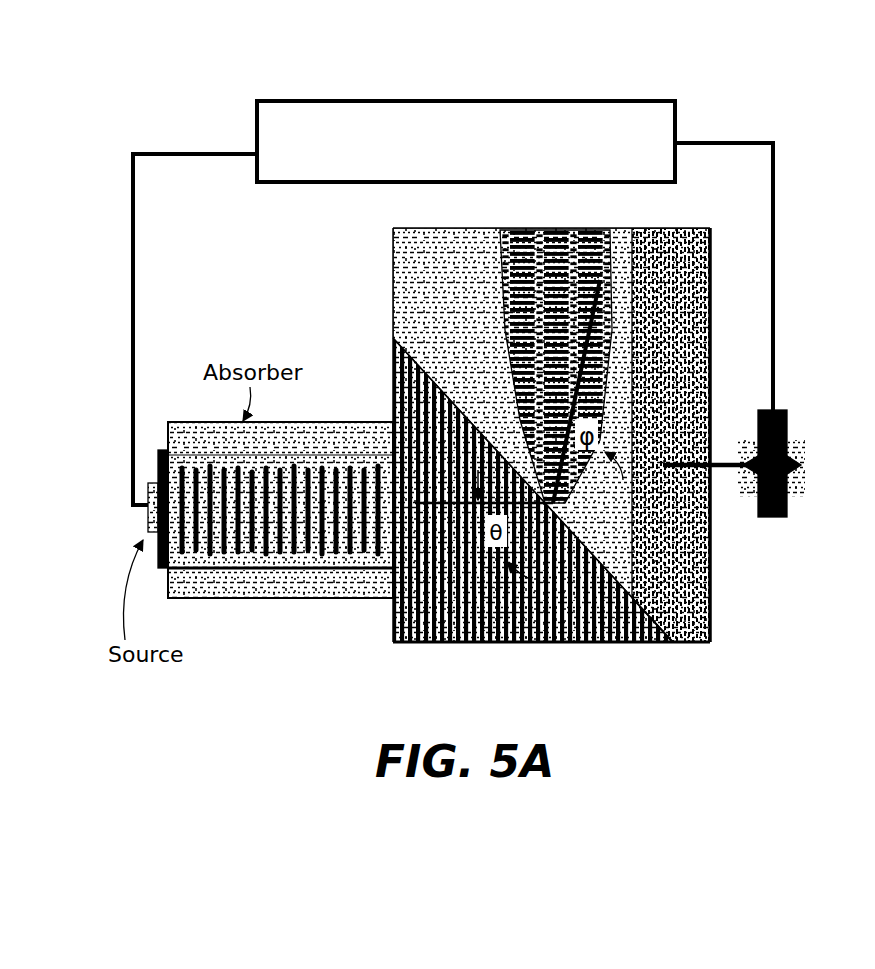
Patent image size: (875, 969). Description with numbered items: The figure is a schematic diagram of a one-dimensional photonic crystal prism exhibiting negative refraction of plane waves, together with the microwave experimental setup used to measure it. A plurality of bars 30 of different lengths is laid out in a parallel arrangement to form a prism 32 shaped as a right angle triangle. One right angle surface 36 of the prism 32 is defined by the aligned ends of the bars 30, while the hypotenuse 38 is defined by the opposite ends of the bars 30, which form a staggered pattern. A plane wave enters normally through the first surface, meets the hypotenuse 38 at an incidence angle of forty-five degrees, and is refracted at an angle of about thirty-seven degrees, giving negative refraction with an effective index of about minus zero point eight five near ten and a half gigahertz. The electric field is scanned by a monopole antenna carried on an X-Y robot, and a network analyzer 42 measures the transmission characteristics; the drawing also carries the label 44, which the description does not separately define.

The bars 30 is at (498, 642).
The prism 32 is at (393, 633).
The right angle surface 36 is at (460, 643).
The hypotenuse 38 is at (612, 577).
The network analyzer 42 is at (755, 523).
The network analyzer 44 is at (675, 127).